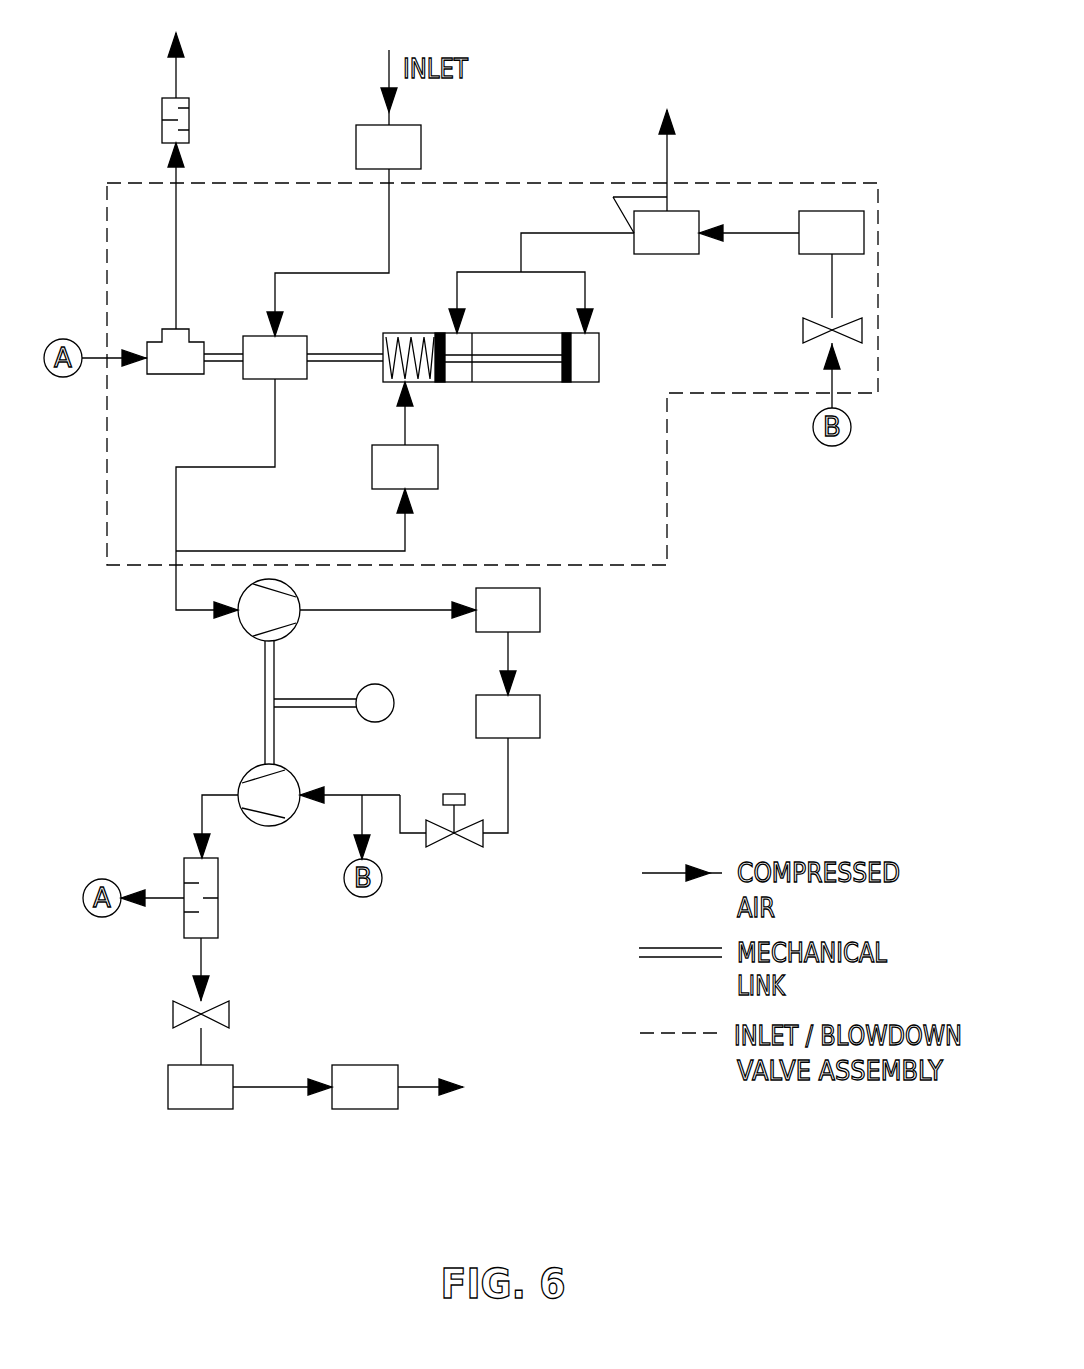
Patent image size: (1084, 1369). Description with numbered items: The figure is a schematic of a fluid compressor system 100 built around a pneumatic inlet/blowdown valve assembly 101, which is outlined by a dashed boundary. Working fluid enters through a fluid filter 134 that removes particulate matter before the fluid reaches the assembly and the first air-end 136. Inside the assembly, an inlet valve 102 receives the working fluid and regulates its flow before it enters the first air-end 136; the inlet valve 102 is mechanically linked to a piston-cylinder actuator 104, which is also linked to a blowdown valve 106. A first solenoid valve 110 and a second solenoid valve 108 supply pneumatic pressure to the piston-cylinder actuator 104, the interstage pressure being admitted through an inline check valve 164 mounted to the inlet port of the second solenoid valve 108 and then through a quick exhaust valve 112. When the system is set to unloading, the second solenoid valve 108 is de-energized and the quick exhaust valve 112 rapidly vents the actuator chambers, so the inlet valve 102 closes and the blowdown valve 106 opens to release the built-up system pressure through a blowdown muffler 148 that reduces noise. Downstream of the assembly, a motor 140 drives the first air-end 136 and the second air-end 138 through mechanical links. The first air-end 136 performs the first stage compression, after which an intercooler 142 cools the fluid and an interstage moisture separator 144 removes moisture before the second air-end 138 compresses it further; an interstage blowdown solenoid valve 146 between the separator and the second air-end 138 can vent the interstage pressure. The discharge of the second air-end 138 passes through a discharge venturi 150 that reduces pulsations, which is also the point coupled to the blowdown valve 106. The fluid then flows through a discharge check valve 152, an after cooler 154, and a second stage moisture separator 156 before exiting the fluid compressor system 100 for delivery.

The fluid compressor system 100 is at (176, 1170).
The pneumatic inlet/blowdown valve assembly 101 is at (806, 138).
The inlet valve 102 is at (255, 372).
The piston-cylinder actuator 104 is at (513, 383).
The blowdown valve 106 is at (177, 376).
The second solenoid valve 108 is at (811, 248).
The first solenoid valve 110 is at (385, 482).
The quick exhaust valve 112 is at (646, 248).
The fluid filter 134 is at (369, 162).
The first air-end 136 is at (240, 625).
The second air-end 138 is at (243, 780).
The motor 140 is at (378, 684).
The intercooler 142 is at (488, 625).
The interstage moisture separator 144 is at (488, 731).
The interstage blowdown solenoid valve 146 is at (467, 850).
The blowdown muffler 148 is at (162, 106).
The discharge venturi 150 is at (218, 883).
The discharge check valve 152 is at (229, 1014).
The after cooler 154 is at (180, 1102).
The second stage moisture separator 156 is at (345, 1102).
The inline check valve 164 is at (803, 330).